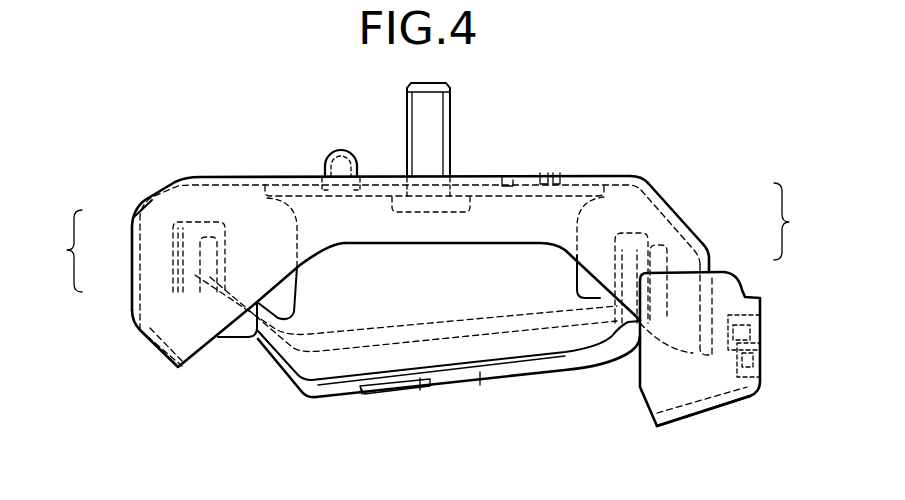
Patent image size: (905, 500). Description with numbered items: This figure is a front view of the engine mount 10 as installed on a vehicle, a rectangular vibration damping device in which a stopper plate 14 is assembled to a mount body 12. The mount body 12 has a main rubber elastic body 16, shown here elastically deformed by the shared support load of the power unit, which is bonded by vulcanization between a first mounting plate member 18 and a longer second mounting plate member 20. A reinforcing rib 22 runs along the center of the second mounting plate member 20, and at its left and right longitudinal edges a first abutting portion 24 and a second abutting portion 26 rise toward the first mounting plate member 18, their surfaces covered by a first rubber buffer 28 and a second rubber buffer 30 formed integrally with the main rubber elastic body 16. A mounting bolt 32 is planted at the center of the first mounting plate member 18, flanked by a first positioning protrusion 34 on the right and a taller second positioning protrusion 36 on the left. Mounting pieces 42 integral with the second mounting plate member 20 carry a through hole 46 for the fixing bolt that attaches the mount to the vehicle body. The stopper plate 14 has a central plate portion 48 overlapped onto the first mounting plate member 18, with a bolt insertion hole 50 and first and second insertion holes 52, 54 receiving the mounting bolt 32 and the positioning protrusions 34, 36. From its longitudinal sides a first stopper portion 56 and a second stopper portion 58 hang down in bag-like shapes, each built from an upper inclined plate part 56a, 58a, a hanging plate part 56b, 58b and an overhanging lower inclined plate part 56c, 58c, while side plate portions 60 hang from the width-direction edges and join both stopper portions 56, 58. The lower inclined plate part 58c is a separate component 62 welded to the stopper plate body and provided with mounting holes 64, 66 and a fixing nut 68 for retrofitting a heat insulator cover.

The engine mount 10 is at (684, 94).
The mount body 12 is at (268, 393).
The stopper plate 14 is at (232, 168).
The main rubber elastic body 16 is at (343, 392).
The first mounting plate member 18 is at (582, 172).
The second mounting plate member 20 is at (576, 388).
The reinforcing rib 22 is at (430, 390).
The first abutting portion 24 is at (207, 250).
The second abutting portion 26 is at (632, 260).
The first rubber buffer 28 is at (210, 340).
The second rubber buffer 30 is at (660, 335).
The mounting bolt 32 is at (433, 117).
The first positioning protrusion 34 is at (562, 175).
The second positioning protrusion 36 is at (340, 152).
The mounting piece 42 is at (516, 372).
The through hole 46 is at (483, 378).
The central plate portion 48 is at (277, 183).
The bolt insertion hole 50 is at (503, 175).
The first insertion hole 52 is at (547, 175).
The second insertion hole 54 is at (366, 176).
The first stopper portion 56 is at (65, 251).
The upper inclined plate part 56a is at (136, 216).
The hanging plate part 56b is at (133, 252).
The lower inclined plate part 56c is at (150, 328).
The second stopper portion 58 is at (791, 221).
The upper inclined plate part 58a is at (685, 216).
The hanging plate part 58b is at (711, 250).
The lower inclined plate part 58c is at (712, 345).
The side plate portion 60 is at (343, 232).
The separate component 62 is at (685, 434).
The mounting hole 64 is at (761, 323).
The mounting hole 66 is at (761, 362).
The fixing nut 68 is at (743, 388).